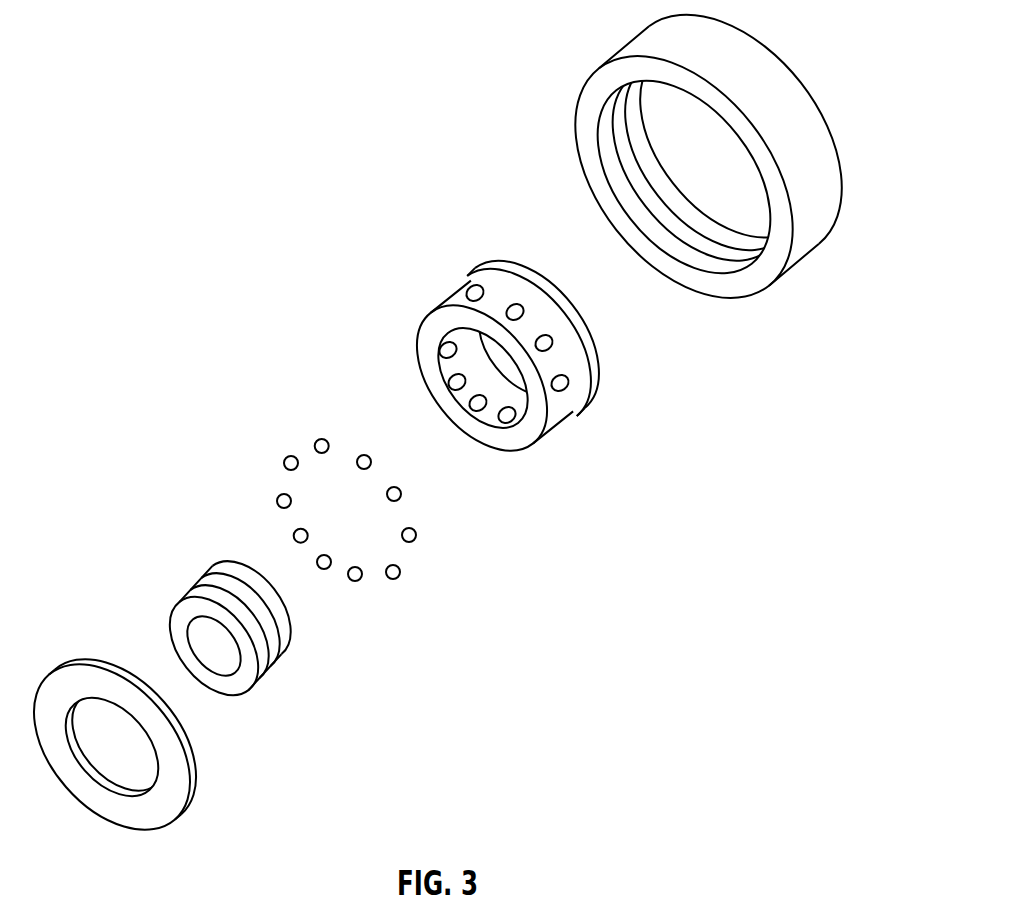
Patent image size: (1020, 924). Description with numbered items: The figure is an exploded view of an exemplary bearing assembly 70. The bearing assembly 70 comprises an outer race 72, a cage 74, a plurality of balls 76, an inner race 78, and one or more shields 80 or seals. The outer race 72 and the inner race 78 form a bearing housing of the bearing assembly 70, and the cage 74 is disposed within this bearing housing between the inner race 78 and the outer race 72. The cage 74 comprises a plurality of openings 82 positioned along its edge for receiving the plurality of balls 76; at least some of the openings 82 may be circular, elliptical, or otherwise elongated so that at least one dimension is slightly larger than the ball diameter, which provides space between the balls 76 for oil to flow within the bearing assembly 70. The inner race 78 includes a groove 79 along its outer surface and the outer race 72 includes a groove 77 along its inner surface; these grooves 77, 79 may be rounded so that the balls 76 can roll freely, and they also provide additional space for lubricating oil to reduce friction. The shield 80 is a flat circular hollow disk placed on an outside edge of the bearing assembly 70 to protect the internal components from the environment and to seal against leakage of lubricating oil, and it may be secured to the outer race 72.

The bearing assembly 70 is at (228, 98).
The outer race 72 is at (655, 177).
The cage 74 is at (475, 309).
The balls 76 is at (416, 537).
The groove 77 is at (637, 205).
The inner race 78 is at (293, 646).
The groove 79 is at (478, 268).
The shield 80 is at (190, 768).
The openings 82 is at (562, 383).